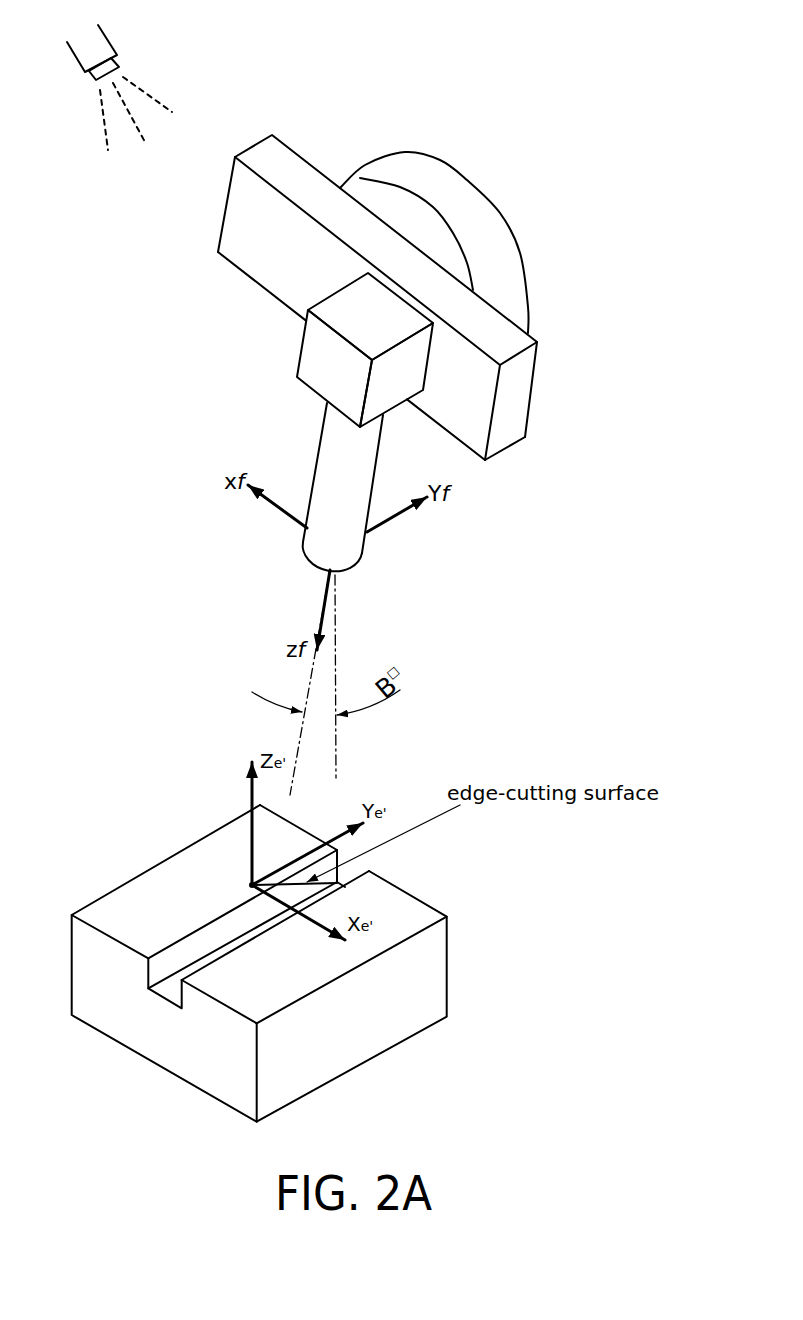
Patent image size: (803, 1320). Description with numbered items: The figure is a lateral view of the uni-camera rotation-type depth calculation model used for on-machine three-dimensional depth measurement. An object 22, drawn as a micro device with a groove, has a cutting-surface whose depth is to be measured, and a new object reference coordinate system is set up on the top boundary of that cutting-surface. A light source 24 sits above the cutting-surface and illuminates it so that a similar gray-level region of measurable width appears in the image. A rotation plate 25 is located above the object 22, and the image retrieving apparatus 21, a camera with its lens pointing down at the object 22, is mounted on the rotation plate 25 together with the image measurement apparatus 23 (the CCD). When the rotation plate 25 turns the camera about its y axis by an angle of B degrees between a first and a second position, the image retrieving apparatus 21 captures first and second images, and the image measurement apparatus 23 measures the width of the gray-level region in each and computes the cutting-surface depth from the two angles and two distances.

The image retrieving apparatus 21 is at (318, 445).
The object 22 is at (373, 1030).
The image measurement apparatus 23 is at (410, 367).
The light source 24 is at (104, 87).
The rotation plate 25 is at (485, 233).